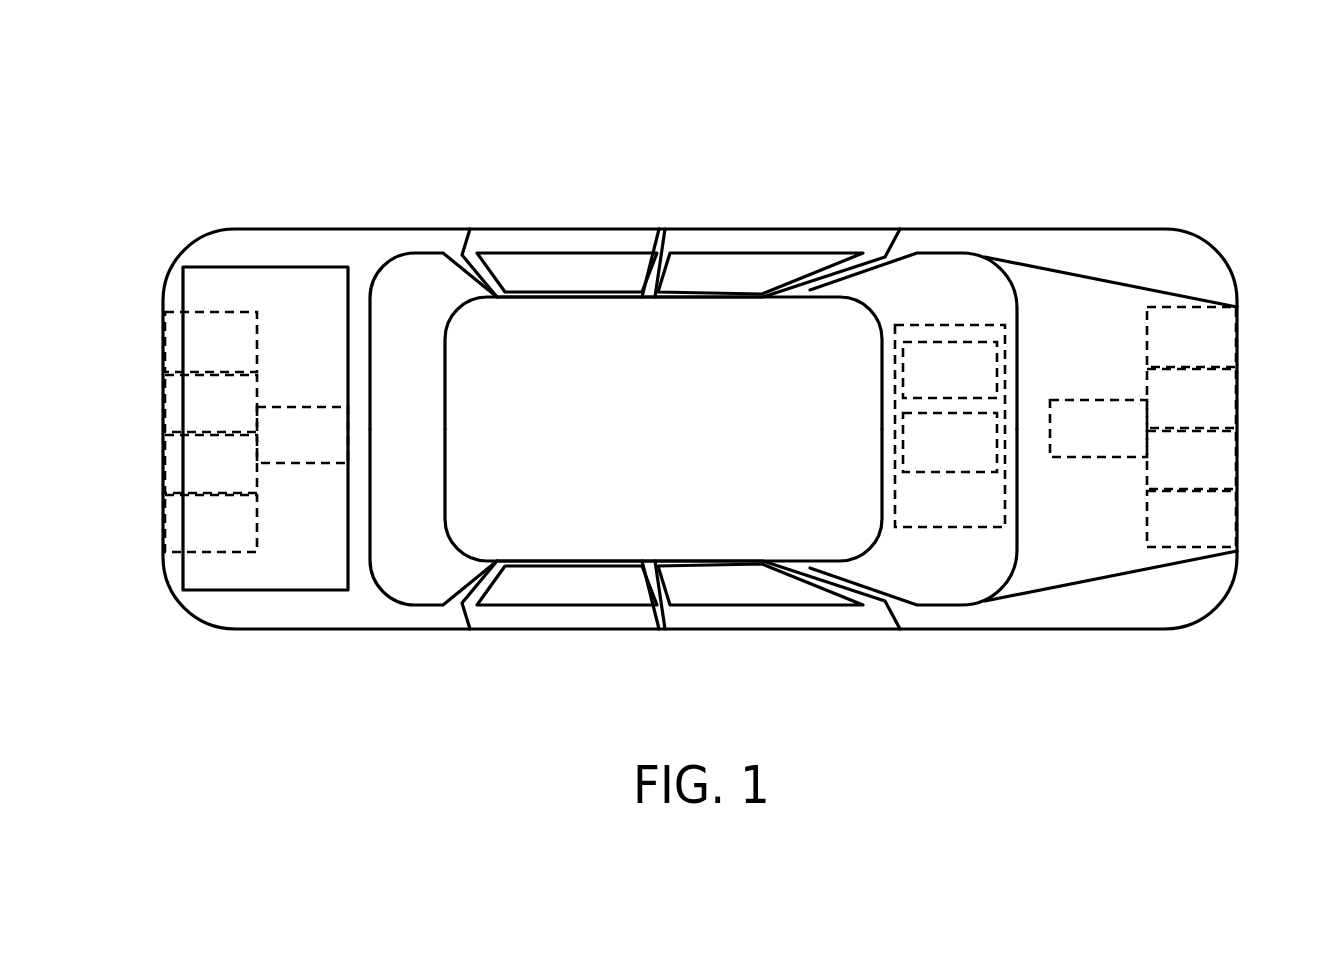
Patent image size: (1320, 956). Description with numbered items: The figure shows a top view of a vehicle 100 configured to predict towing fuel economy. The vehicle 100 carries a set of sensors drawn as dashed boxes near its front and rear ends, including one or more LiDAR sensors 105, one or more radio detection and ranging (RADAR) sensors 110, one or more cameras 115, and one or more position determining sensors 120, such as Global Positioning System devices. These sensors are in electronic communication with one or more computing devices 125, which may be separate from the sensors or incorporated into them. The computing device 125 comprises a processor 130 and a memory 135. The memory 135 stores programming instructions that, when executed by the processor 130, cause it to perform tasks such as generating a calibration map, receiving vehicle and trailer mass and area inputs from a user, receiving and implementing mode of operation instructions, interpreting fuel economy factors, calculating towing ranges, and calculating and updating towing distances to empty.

The vehicle 100 is at (983, 229).
The LiDAR sensor 105 is at (193, 414).
The radio detection and ranging (RADAR) sensor 110 is at (193, 475).
The camera 115 is at (193, 353).
The position determining sensor 120 is at (284, 446).
The computing device 125 is at (932, 513).
The processor 130 is at (932, 381).
The memory 135 is at (932, 453).